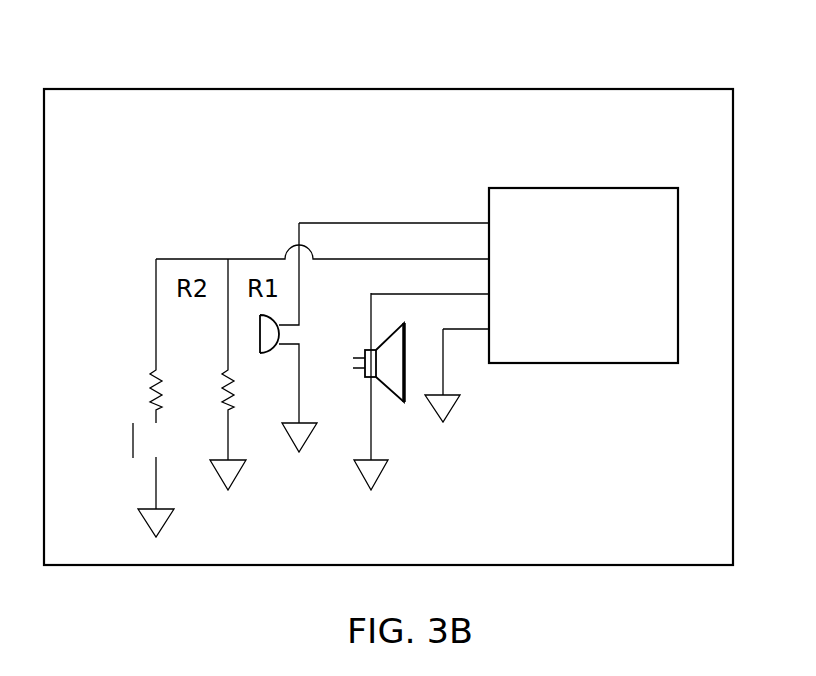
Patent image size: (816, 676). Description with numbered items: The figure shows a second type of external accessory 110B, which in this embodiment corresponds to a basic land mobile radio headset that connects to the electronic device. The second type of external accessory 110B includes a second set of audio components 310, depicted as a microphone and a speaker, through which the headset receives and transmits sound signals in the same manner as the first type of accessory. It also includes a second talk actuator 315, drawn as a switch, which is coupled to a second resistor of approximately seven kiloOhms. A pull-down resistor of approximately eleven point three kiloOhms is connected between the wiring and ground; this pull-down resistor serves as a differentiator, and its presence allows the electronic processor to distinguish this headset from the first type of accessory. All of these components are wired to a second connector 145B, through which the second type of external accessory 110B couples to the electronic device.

The second type of external accessory 110B is at (410, 88).
The second connector 145B is at (583, 187).
The second talk actuator 315 is at (133, 441).
The second set of audio components 310 is at (267, 488).